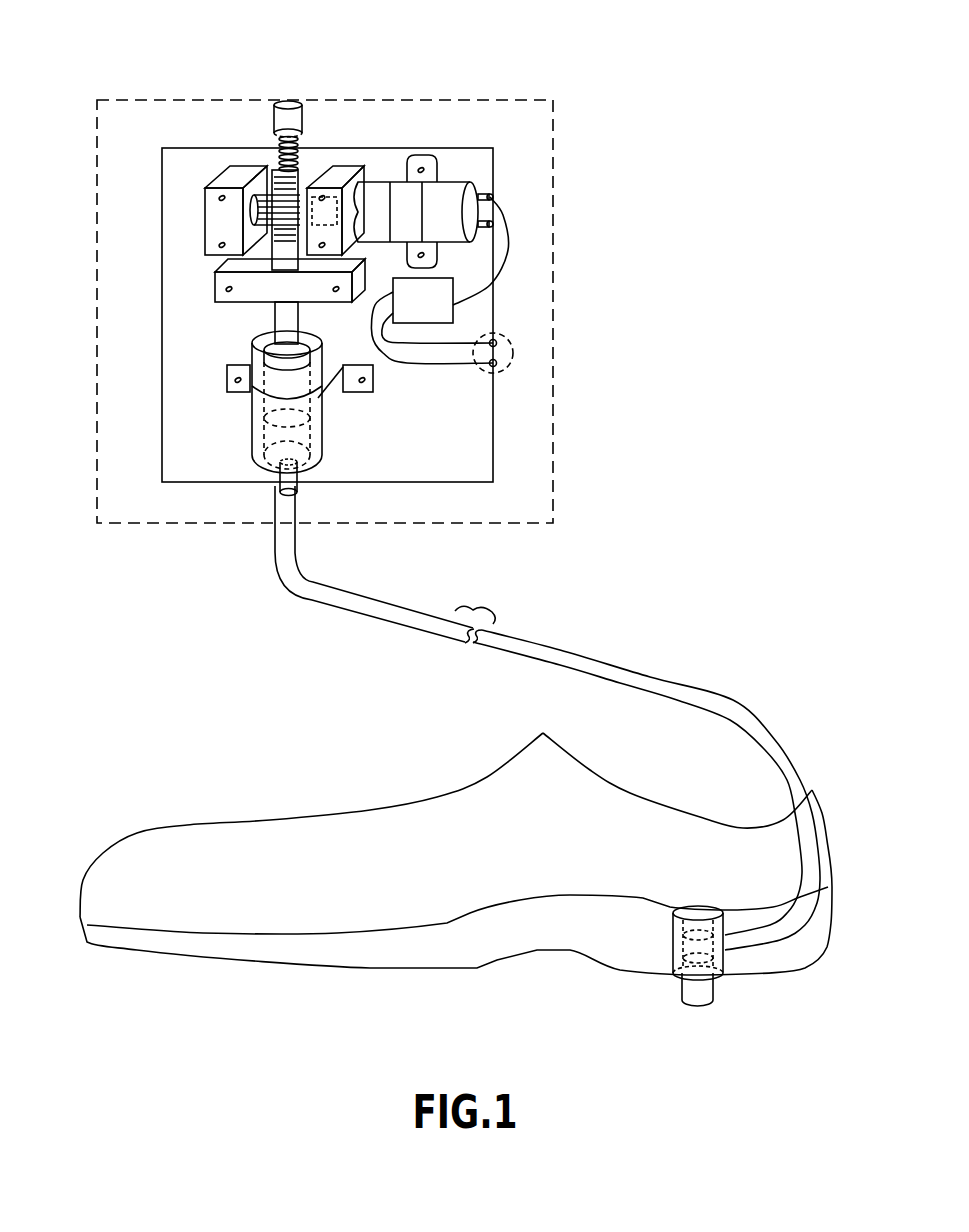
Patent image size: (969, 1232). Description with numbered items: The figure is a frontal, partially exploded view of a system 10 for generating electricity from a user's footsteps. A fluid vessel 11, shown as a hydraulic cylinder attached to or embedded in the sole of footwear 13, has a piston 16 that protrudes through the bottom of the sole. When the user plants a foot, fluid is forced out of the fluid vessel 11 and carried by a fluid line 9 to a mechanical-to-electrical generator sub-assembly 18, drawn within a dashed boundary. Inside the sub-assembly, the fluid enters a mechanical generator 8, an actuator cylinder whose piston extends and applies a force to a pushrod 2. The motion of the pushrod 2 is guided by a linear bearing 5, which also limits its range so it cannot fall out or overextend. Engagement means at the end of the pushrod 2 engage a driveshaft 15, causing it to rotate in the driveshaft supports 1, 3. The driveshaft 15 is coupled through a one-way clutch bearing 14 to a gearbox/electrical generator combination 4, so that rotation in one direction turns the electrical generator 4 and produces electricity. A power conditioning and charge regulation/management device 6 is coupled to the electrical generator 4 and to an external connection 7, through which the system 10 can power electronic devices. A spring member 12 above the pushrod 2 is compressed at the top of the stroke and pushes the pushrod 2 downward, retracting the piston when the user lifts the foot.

The driveshaft support 1 is at (232, 178).
The pushrod 2 is at (245, 197).
The driveshaft support 3 is at (339, 165).
The electrical generator 4 is at (376, 192).
The linear bearing 5 is at (225, 283).
The power conditioning device and/or charge regulation/management device 6 is at (437, 312).
The external connection 7 is at (513, 355).
The mechanical generator 8 is at (300, 390).
The fluid line 9 is at (553, 651).
The system 10 is at (684, 256).
The fluid vessel 11 is at (713, 977).
The spring member 12 is at (277, 158).
The footwear 13 is at (313, 840).
The one-way clutch bearing 14 is at (340, 210).
The driveshaft 15 is at (252, 212).
The piston 16 is at (695, 995).
The mechanical-to-electrical generator sub-assembly 18 is at (506, 96).